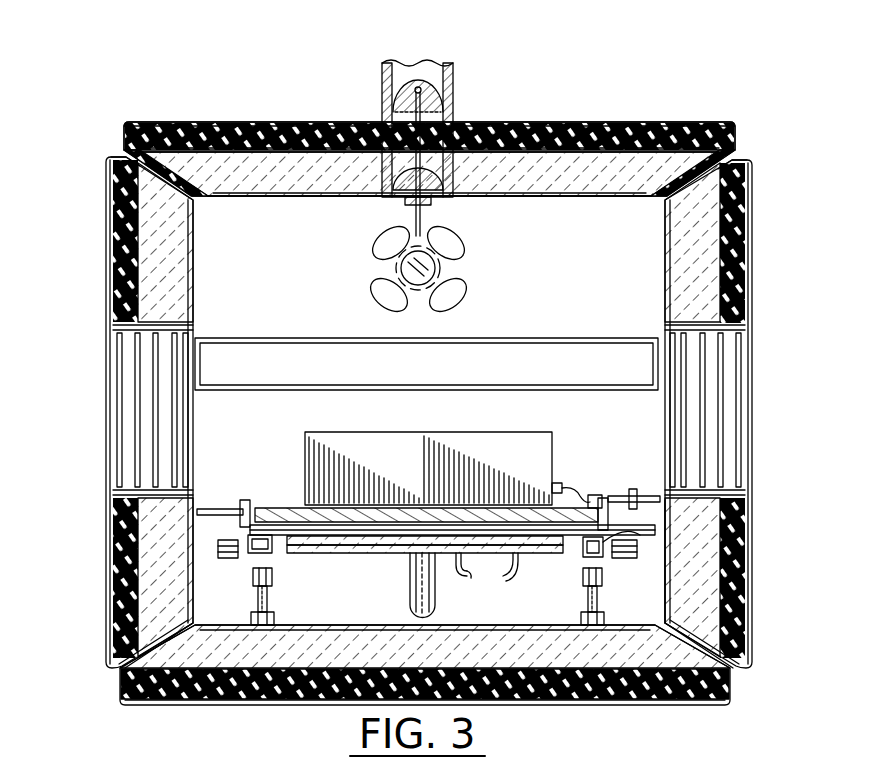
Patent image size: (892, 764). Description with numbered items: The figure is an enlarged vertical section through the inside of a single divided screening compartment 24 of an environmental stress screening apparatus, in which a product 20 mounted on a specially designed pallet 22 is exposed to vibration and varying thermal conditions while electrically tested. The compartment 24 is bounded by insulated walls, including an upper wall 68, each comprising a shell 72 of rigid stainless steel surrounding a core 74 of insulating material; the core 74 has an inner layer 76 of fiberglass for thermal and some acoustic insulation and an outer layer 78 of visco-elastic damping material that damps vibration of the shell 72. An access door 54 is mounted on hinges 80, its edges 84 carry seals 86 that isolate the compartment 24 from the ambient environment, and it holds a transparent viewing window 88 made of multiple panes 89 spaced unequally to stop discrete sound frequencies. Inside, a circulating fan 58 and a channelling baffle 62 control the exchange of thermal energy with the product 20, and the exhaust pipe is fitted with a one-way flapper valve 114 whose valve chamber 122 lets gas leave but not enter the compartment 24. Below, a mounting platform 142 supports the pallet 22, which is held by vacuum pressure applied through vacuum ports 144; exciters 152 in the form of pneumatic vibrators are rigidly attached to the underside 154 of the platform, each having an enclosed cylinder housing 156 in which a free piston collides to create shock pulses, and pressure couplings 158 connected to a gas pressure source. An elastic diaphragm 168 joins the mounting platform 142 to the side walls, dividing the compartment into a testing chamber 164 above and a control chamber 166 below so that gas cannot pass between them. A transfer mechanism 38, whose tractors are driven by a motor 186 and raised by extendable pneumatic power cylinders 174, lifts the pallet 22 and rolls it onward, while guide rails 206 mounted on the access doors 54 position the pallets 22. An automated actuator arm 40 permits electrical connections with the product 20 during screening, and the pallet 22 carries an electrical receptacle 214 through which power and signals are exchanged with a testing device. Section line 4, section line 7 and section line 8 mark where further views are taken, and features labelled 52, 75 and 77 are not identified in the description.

The section line 4- 4 is at (245, 400).
The section line 7- 7 is at (422, 62).
The section line 8- 8 is at (103, 362).
The product 20 is at (296, 453).
The pallet 22 is at (288, 499).
The divided screening compartment 24 is at (563, 271).
The transfer mechanism 38 is at (240, 560).
The actuator arm 40 is at (627, 486).
The corner joint 52 is at (124, 155).
The access door 54 is at (104, 180).
The circulating fan 58 is at (377, 261).
The channelling baffle 62 is at (535, 342).
The upper wall 68 is at (728, 122).
The shell 72 is at (211, 180).
The core 74 is at (280, 163).
The inner liner 75 is at (612, 150).
The inner layer 76 is at (525, 147).
The barrier layer 77 is at (549, 148).
The outer layer 78 is at (663, 150).
The hinge 80 is at (104, 396).
The edge 84 is at (125, 657).
The seal 86 is at (127, 677).
The transparent viewing window 88 is at (756, 403).
The pane 89 is at (185, 470).
The one-way flapper valve 114 is at (456, 118).
The valve chamber 122 is at (395, 127).
The mounting platform 142 is at (348, 541).
The vacuum ports 144 is at (390, 541).
The exciter 152 is at (401, 605).
The underside 154 is at (511, 562).
The cylinder housing 156 is at (444, 586).
The pressure couplings 158 is at (458, 601).
The testing chamber 164 is at (213, 224).
The control chamber 166 is at (637, 611).
The diaphragm 168 is at (662, 540).
The pneumatic power cylinder 174 is at (251, 603).
The motor 186 is at (732, 578).
The guide rail 206 is at (246, 501).
The electrical receptacle 214 is at (607, 496).